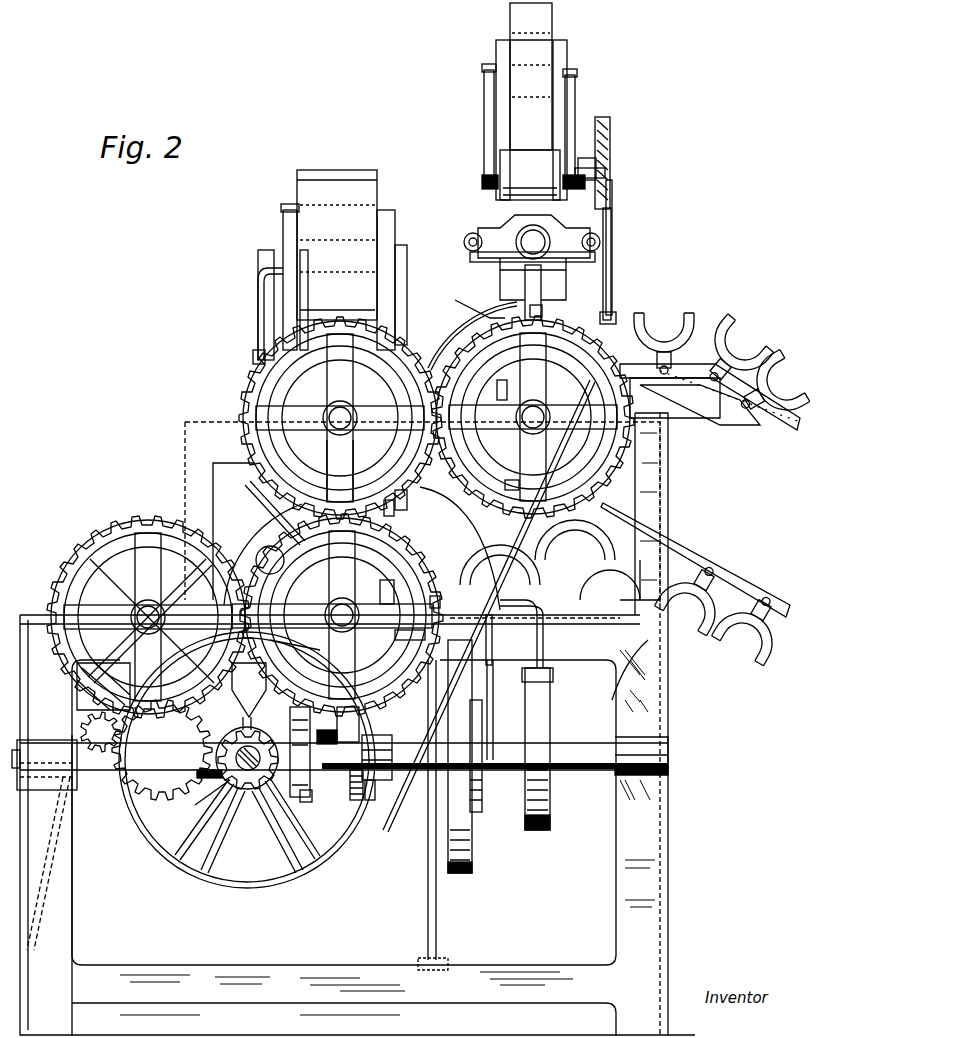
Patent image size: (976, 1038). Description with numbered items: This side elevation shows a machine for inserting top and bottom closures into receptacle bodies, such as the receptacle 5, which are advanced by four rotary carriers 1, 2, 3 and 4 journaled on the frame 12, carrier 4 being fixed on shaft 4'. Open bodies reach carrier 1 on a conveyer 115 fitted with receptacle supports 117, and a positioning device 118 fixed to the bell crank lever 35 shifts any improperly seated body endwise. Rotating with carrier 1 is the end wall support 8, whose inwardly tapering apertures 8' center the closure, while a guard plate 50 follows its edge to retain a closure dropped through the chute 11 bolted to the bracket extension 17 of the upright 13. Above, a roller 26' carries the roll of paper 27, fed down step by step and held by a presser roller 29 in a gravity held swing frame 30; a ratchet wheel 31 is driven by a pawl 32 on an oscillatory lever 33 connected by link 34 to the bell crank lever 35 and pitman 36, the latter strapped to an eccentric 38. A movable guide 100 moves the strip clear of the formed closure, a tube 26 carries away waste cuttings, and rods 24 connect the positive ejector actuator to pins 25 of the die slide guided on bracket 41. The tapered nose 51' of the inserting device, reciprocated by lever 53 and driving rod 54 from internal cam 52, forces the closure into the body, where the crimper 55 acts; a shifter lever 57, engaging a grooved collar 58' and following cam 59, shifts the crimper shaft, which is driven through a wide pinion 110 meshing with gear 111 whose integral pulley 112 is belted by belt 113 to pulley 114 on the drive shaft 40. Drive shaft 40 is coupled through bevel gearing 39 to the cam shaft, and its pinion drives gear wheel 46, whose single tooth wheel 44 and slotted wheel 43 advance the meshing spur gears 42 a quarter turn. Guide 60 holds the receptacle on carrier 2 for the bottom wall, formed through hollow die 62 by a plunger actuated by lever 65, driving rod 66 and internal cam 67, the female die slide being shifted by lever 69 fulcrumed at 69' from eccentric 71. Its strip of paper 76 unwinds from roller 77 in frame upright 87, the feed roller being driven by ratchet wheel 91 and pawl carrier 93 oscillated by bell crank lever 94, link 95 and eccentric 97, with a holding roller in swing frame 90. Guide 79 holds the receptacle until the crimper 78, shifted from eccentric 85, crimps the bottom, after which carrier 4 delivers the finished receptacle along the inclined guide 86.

The rotary carrier 1 is at (668, 484).
The rotary carrier 2 is at (240, 408).
The rotary carrier 3 is at (445, 586).
The rotary carrier 4 is at (146, 614).
The shaft 4' is at (533, 417).
The receptacle 5 is at (100, 733).
The receptacle closure or end wall support 8 is at (710, 361).
The inwardly tapering apertures 8' is at (587, 350).
The chute 11 is at (542, 300).
The frame 12 is at (672, 720).
The upright 13 is at (568, 66).
The bracket extension 17 is at (572, 224).
The rods 24 is at (601, 242).
The pins 25 is at (592, 258).
The tube 26 is at (517, 242).
The roller 26' is at (553, 28).
The roll of paper 27 is at (510, 14).
The presser roller 29 is at (530, 175).
The gravity held swing frame 30 is at (576, 100).
The ratchet wheel 31 is at (606, 172).
The spring pressed driving pawl 32 is at (598, 160).
The oscillatory lever 33 is at (611, 136).
The link 34 is at (612, 226).
The bell crank lever 35 is at (613, 318).
The pitman 36 is at (35, 792).
The eccentric 38 is at (503, 640).
The bevel gearing 39 is at (261, 783).
The drive shaft 40 is at (248, 790).
The bracket 41 is at (560, 618).
The spur gears 42 is at (428, 505).
The slotted wheel 43 is at (110, 590).
The single tooth wheel 44 is at (80, 695).
The gear wheel 46 is at (162, 760).
The guard plate 50 is at (466, 342).
The tapered nose 51' is at (362, 548).
The internal cam 52 is at (472, 856).
The lever 53 is at (363, 752).
The driving rod 54 is at (382, 776).
The crimper 55 is at (383, 725).
The shifter lever 57 is at (582, 768).
The pulley 58' is at (554, 749).
The cam 59 is at (482, 792).
The relatively fixed guide 60 is at (413, 497).
The hollow die 62 is at (396, 508).
The actuating lever 65 is at (442, 602).
The driving rod 66 is at (375, 735).
The internal cam 67 is at (372, 822).
The shifting lever 69 is at (403, 640).
The fulcrum 69' is at (394, 587).
The eccentric 71 is at (346, 795).
The strip of paper 76 is at (337, 299).
The roller 77 is at (380, 206).
The crimper 78 is at (264, 560).
The relatively fixed guide 79 is at (268, 520).
The eccentric 85 is at (199, 811).
The inclined guide 86 is at (298, 642).
The frame upright 87 is at (283, 240).
The swing frame 90 is at (398, 306).
The ratchet wheel 91 is at (253, 357).
The pawl carrier 93 is at (258, 330).
The bell crank lever 94 is at (308, 312).
The link 95 is at (258, 284).
The eccentric 97 is at (310, 805).
The movable guide 100 is at (502, 268).
The wide pinion 110 is at (392, 446).
The gear 111 is at (509, 479).
The pulley 112 is at (507, 383).
The belt 113 is at (386, 814).
The pulley 114 is at (310, 872).
The conveyer 115 is at (735, 410).
The receptacle supports 117 is at (745, 640).
The positioning device 118 is at (544, 310).